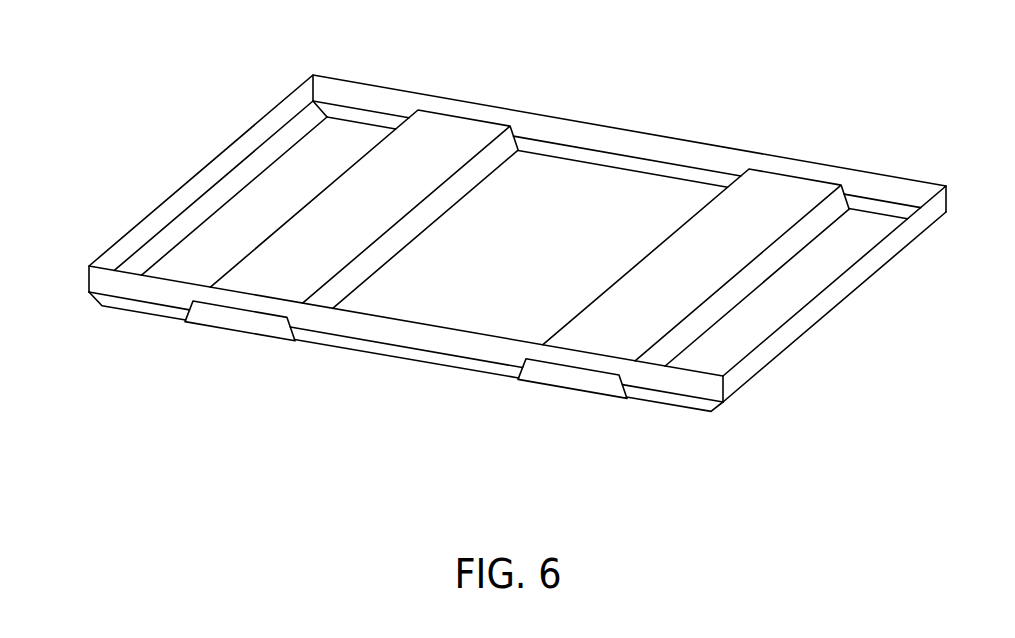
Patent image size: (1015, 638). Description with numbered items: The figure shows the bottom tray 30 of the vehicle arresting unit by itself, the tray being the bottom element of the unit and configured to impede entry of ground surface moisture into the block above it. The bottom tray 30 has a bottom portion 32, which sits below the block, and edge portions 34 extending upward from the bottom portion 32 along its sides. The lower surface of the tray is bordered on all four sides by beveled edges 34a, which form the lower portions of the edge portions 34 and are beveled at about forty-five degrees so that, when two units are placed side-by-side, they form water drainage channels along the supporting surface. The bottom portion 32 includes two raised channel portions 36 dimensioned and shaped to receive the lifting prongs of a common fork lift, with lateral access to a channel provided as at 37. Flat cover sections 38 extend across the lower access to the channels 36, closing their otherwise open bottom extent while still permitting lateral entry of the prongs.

The bottom tray 30 is at (507, 251).
The bottom portion 32 is at (763, 318).
The edge portions 34 is at (888, 258).
The beveled edges 34a is at (102, 306).
The raised channel portions 36 is at (466, 134).
The access 37 is at (569, 378).
The flat cover sections 38 is at (235, 324).